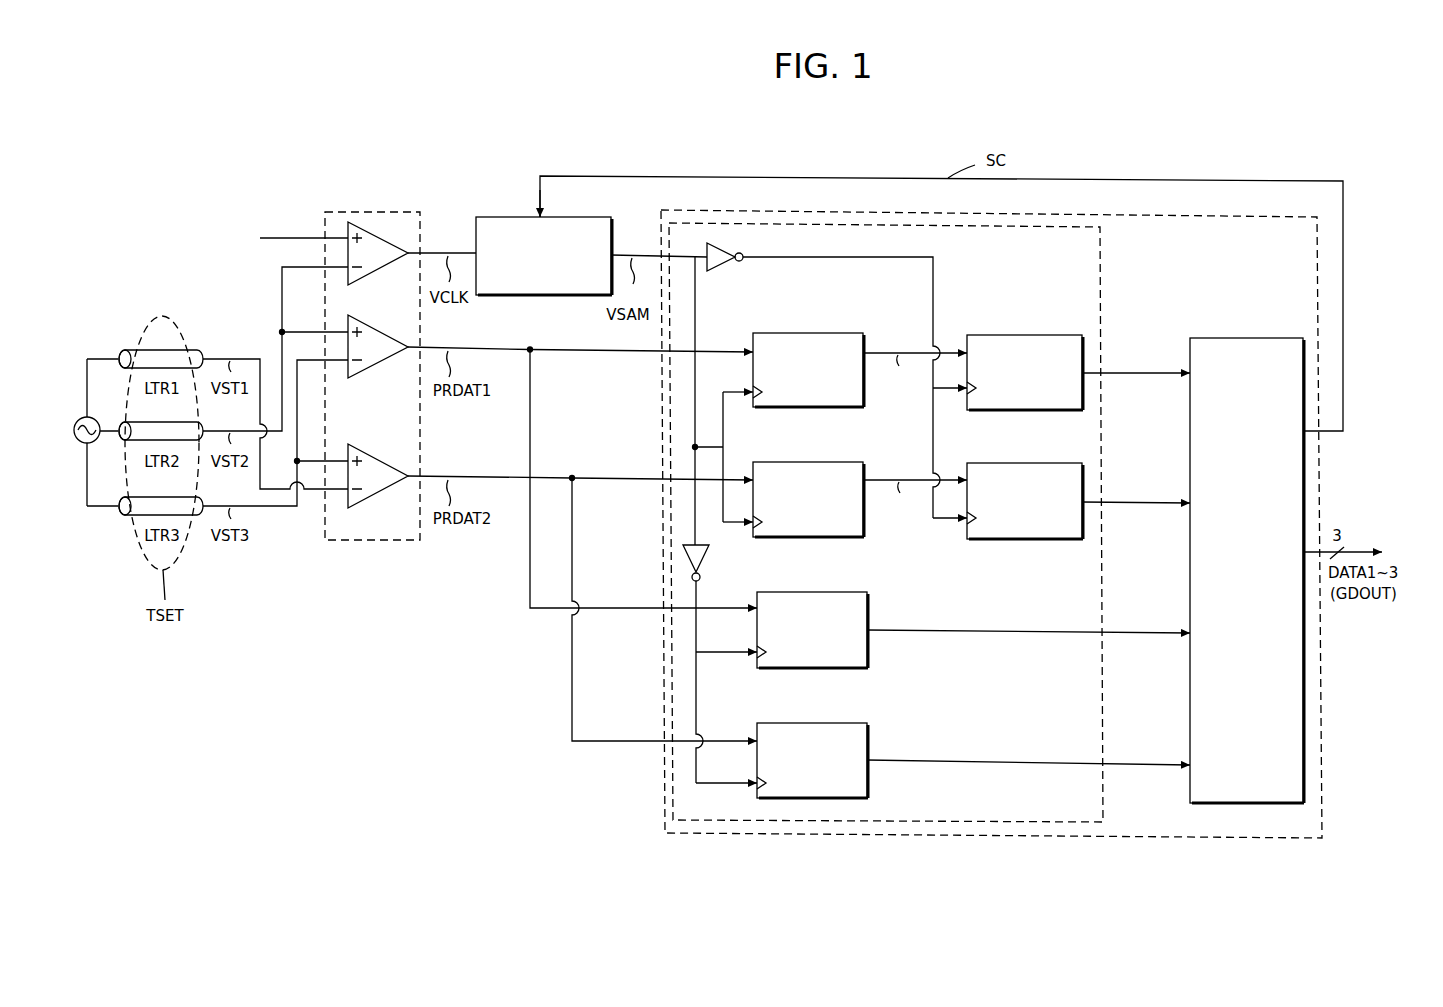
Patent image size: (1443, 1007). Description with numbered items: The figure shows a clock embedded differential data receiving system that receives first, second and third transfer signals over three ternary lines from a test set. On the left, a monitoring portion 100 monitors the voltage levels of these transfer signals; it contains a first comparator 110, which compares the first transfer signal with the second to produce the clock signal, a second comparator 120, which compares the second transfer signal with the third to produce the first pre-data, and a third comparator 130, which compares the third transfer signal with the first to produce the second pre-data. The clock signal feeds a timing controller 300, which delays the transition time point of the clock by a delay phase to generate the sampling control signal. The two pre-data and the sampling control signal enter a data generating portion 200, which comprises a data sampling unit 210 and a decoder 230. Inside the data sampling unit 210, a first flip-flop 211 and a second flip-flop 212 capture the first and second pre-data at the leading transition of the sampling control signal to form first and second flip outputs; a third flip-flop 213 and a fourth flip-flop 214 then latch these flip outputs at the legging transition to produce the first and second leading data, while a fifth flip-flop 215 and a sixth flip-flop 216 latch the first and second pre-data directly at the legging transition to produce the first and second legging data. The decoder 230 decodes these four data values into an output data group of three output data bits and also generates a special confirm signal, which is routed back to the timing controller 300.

The monitoring portion 100 is at (370, 212).
The first comparator 110 is at (384, 266).
The second comparator 120 is at (384, 359).
The third comparator 130 is at (384, 488).
The timing controller 300 is at (557, 217).
The data generating portion 200 is at (1133, 216).
The data sampling unit 210 is at (1100, 247).
The first flip-flop 211 is at (810, 333).
The second flip-flop 212 is at (810, 462).
The third flip-flop 213 is at (1023, 335).
The fourth flip-flop 214 is at (1023, 463).
The fifth flip-flop 215 is at (810, 592).
The sixth flip-flop 216 is at (810, 723).
The decoder 230 is at (1243, 338).